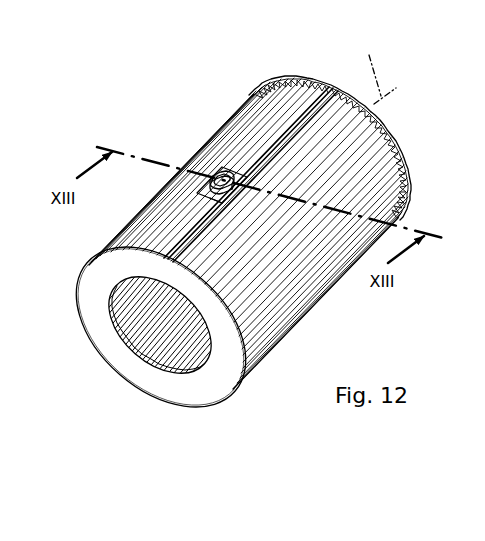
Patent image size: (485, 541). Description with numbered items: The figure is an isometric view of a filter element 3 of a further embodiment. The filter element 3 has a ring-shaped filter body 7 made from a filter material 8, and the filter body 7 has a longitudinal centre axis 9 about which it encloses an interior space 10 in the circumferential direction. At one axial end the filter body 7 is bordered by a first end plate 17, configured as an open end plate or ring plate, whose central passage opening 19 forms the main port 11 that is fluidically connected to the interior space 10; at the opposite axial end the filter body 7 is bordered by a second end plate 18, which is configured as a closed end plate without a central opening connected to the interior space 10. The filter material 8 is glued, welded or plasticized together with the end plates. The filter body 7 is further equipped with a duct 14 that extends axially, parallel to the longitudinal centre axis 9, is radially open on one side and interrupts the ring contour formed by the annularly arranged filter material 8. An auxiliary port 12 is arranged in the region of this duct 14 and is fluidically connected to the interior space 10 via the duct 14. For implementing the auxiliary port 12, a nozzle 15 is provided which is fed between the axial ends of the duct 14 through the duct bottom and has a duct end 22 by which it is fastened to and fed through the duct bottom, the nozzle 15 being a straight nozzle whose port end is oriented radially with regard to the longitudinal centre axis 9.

The filter element 3 is at (168, 78).
The filter body 7 is at (186, 153).
The filter material 8 is at (291, 304).
The longitudinal centre axis 9 is at (377, 68).
The interior space 10 is at (147, 353).
The main port 11 is at (172, 349).
The auxiliary port 12 is at (221, 176).
The duct 14 is at (288, 118).
The nozzle 15 is at (209, 192).
The first end plate 17 is at (139, 392).
The second end plate 18 is at (393, 145).
The central passage opening 19 is at (172, 368).
The duct end 22 is at (241, 170).